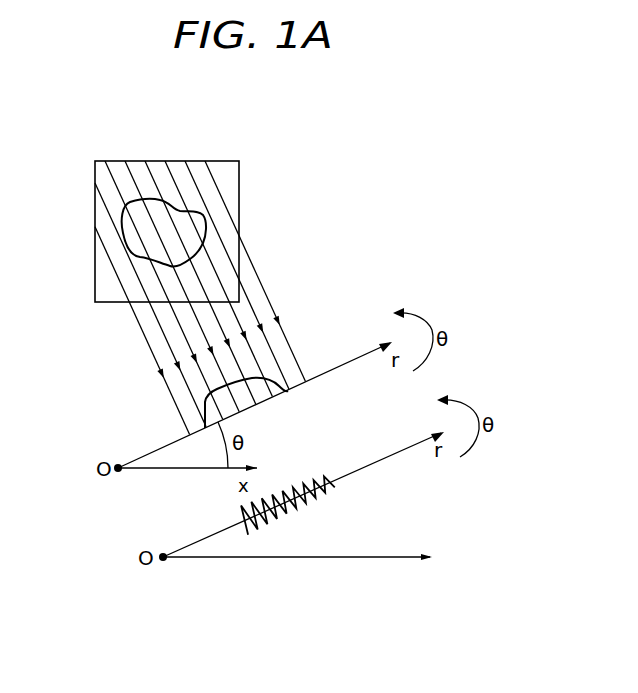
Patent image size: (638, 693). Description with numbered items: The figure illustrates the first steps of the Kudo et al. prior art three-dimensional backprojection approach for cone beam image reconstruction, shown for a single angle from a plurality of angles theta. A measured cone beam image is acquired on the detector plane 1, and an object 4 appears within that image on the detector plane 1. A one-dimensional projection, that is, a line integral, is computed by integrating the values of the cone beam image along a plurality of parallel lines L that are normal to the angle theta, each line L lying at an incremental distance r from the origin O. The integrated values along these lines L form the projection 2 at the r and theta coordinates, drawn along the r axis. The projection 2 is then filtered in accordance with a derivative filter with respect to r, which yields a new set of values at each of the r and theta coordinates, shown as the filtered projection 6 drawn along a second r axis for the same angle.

The detector plane 1 is at (230, 161).
The projection 2 is at (277, 378).
The object 4 is at (130, 203).
The filtered projection 6 is at (308, 482).
The parallel line L is at (268, 303).